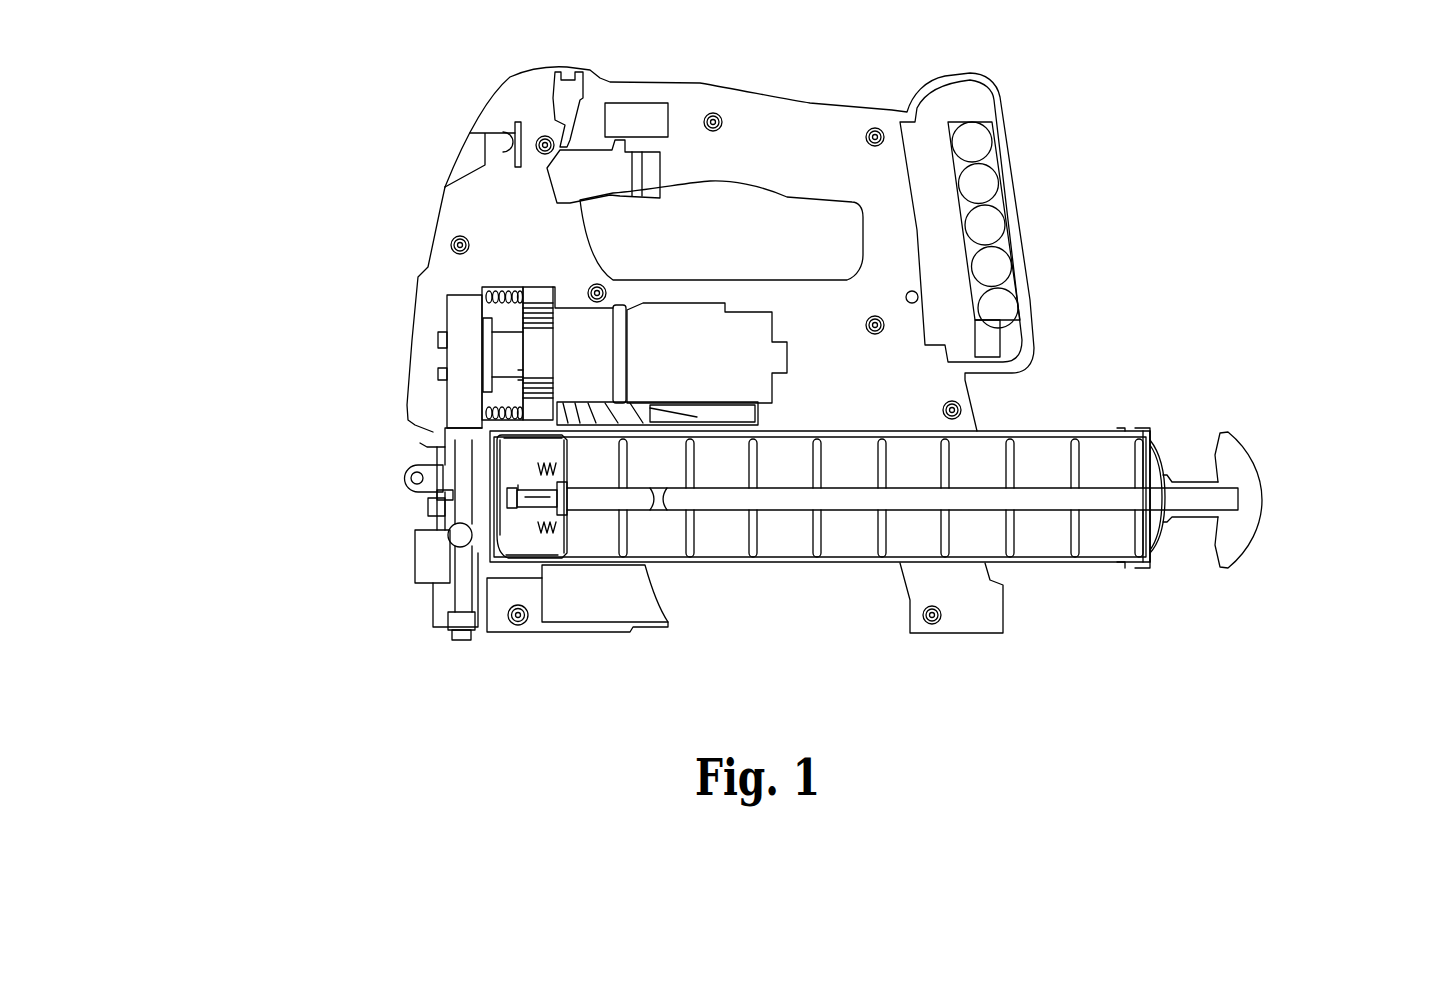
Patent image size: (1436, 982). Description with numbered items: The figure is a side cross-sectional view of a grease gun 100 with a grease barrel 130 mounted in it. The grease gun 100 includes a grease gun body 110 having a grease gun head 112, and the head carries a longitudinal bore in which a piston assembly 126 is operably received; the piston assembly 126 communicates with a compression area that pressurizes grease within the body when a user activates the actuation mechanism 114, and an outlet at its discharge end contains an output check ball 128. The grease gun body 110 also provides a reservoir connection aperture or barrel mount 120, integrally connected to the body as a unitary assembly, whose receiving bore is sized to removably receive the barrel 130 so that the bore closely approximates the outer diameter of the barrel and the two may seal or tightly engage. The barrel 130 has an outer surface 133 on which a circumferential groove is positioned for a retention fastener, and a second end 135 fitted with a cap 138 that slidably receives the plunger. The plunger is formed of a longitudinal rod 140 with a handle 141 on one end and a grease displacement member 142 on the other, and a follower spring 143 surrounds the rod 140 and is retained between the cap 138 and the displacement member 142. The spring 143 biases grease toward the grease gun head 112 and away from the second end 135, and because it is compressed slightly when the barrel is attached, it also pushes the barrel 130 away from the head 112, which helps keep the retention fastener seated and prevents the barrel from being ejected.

The grease gun 100 is at (302, 308).
The grease gun body 110 is at (457, 208).
The grease gun head 112 is at (405, 478).
The actuation mechanism 114 is at (612, 190).
The barrel mount 120 is at (540, 565).
The piston assembly 126 is at (425, 508).
The output check ball 128 is at (437, 535).
The grease barrel 130 is at (1115, 602).
The outer surface 133 is at (1065, 438).
The second end 135 is at (1175, 403).
The cap 138 is at (1160, 545).
The longitudinal rod 140 is at (1040, 500).
The handle 141 is at (1240, 473).
The grease displacement member 142 is at (565, 457).
The follower spring 143 is at (1010, 565).